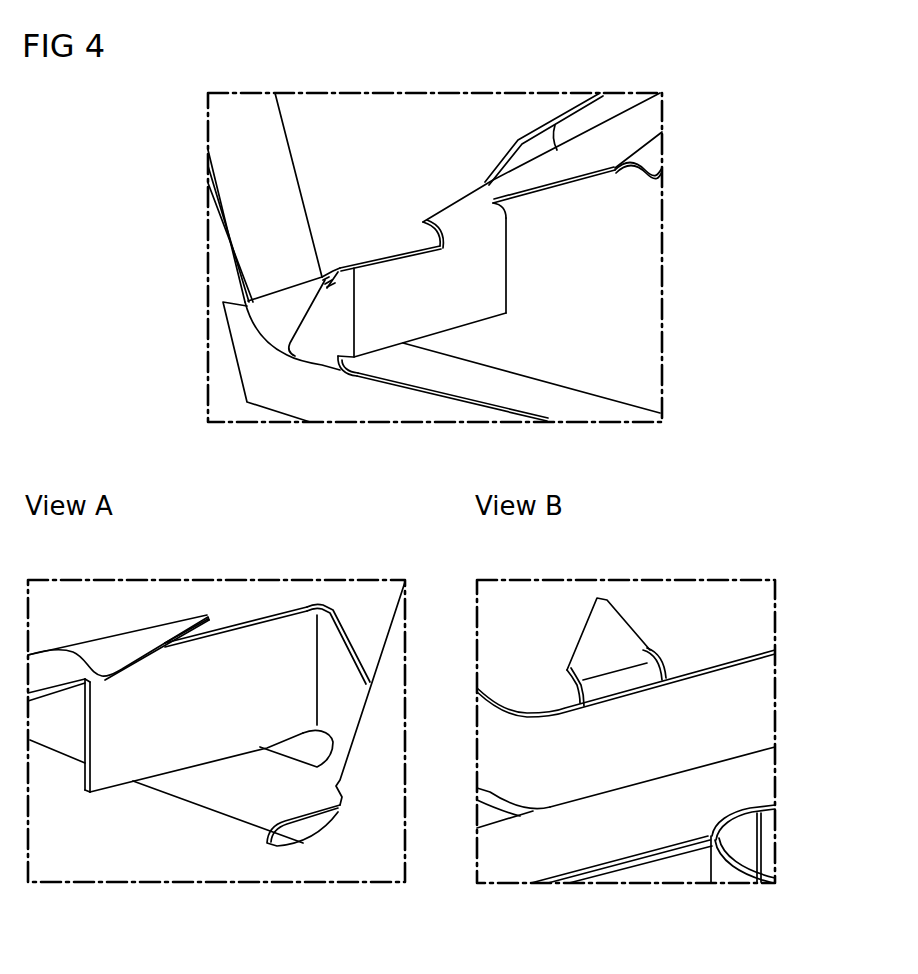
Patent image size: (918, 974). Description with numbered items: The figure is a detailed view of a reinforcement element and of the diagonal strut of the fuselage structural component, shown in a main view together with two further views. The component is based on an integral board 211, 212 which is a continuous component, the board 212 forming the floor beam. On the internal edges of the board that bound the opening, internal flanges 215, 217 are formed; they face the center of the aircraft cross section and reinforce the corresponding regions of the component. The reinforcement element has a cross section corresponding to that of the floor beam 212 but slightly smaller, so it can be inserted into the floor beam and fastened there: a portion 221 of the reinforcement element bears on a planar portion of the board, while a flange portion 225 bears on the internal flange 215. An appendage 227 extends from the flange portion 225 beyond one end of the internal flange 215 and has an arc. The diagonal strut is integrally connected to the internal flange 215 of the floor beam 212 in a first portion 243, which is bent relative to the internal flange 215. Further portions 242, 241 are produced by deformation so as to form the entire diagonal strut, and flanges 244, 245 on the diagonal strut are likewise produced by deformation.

The board 211 is at (370, 787).
The floor beam 212 is at (75, 872).
The internal flange 215 is at (578, 400).
The internal flange 217 is at (310, 186).
The portion of the reinforcement element 221 is at (430, 385).
The flange portion 225 is at (303, 830).
The appendage 227 is at (498, 777).
The further portion of the diagonal strut 241 is at (605, 140).
The further portion of the diagonal strut 242 is at (503, 273).
The first portion of the diagonal strut 243 is at (330, 268).
The flange of the diagonal strut 244 is at (580, 125).
The flange of the diagonal strut 245 is at (655, 175).